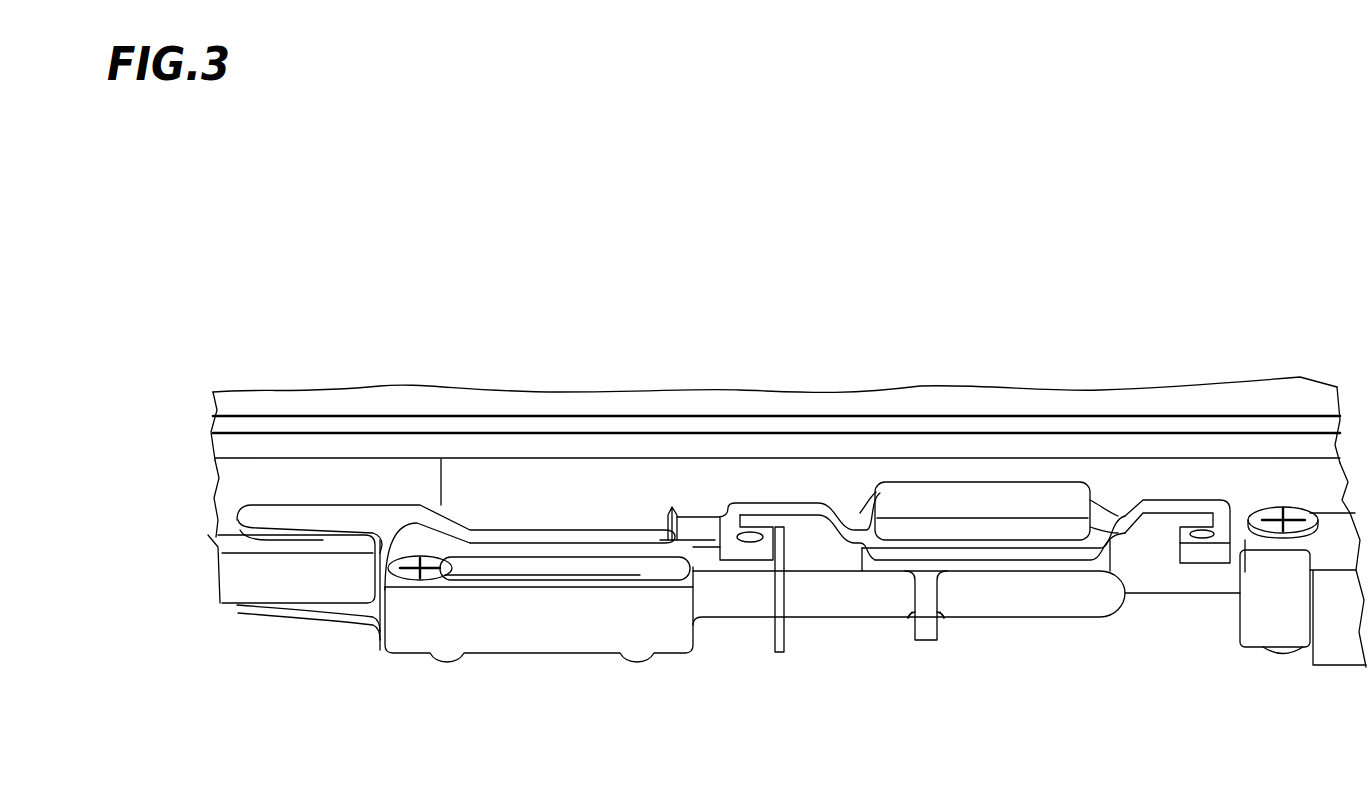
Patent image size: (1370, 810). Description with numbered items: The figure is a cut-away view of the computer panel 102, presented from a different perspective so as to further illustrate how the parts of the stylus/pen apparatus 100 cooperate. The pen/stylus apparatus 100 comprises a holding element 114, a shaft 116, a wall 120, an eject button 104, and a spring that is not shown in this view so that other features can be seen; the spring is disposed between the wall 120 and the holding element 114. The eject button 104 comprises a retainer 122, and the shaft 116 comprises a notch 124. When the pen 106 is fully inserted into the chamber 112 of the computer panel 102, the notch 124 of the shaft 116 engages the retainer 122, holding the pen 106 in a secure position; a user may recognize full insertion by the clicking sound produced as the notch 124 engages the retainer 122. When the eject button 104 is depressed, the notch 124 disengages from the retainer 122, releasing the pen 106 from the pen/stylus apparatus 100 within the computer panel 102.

The pen/stylus apparatus 100 is at (193, 506).
The computer panel 102 is at (1243, 230).
The eject button 104 is at (1000, 490).
The pen 106 is at (233, 483).
The chamber 112 is at (200, 454).
The holding element 114 is at (592, 635).
The shaft 116 is at (1090, 602).
The wall 120 is at (782, 653).
The retainer 122 is at (923, 640).
The notch 124 is at (910, 614).